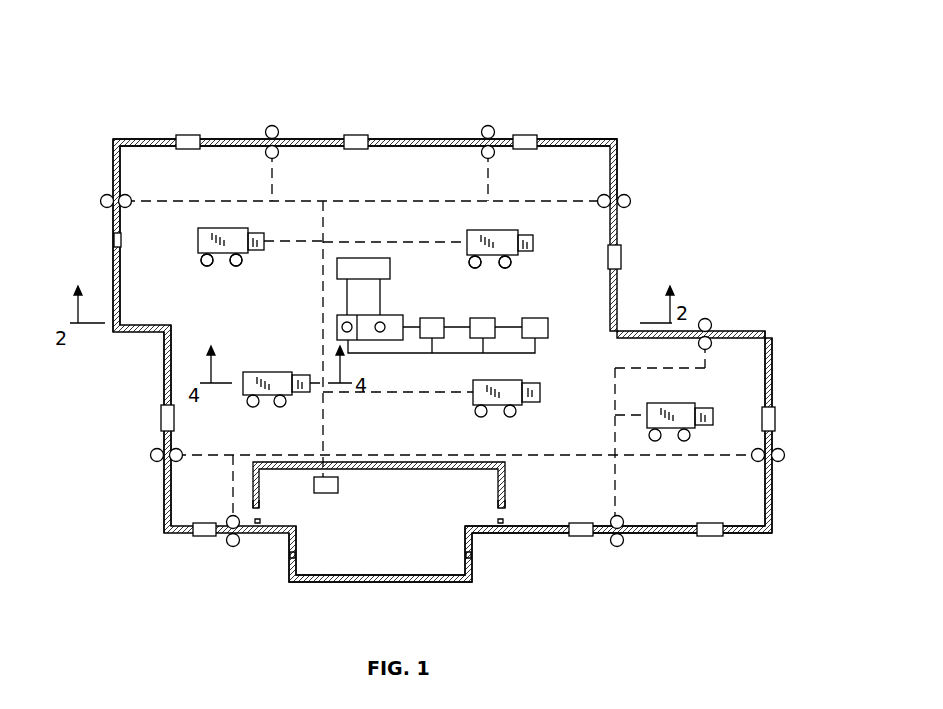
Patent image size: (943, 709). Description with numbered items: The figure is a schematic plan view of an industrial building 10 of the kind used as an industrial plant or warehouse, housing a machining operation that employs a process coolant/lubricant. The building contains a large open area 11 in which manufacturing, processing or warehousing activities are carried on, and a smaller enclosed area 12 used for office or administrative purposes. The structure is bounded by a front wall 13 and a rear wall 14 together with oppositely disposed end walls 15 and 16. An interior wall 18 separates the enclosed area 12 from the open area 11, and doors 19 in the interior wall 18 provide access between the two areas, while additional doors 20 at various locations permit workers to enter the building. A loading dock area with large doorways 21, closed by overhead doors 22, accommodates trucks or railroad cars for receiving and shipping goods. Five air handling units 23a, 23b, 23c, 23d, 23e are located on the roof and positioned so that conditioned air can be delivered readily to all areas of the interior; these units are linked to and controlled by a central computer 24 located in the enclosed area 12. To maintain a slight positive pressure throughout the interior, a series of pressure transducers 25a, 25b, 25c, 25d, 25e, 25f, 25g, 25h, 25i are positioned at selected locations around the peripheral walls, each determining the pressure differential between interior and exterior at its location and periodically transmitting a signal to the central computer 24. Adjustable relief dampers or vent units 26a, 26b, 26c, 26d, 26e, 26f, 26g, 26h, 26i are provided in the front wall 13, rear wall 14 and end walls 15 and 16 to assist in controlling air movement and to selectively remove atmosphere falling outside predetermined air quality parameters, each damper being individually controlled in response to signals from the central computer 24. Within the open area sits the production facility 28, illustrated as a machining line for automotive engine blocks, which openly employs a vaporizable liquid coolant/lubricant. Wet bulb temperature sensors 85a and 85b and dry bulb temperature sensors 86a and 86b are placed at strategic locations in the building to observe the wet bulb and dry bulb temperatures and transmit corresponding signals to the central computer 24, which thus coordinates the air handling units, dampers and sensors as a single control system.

The industrial building 10 is at (662, 111).
The open area 11 is at (286, 343).
The enclosed area 12 is at (350, 559).
The front wall 13 is at (525, 535).
The rear wall 14 is at (418, 138).
The end wall 15 is at (164, 360).
The end wall 16 is at (773, 356).
The interior wall 18 is at (437, 464).
The doors 19 is at (259, 512).
The doors 20 is at (577, 138).
The doorways 21 is at (113, 152).
The overhead doors 22 is at (114, 255).
The air handling unit 23a is at (196, 239).
The air handling unit 23b is at (521, 233).
The air handling unit 23c is at (244, 397).
The air handling unit 23d is at (523, 382).
The air handling unit 23e is at (689, 404).
The central computer 24 is at (338, 491).
The pressure transducer 25a is at (273, 125).
The pressure transducer 25b is at (489, 125).
The pressure transducer 25c is at (631, 196).
The pressure transducer 25d is at (712, 321).
The pressure transducer 25e is at (784, 464).
The pressure transducer 25f is at (622, 548).
The pressure transducer 25g is at (226, 546).
The pressure transducer 25h is at (150, 457).
The pressure transducer 25i is at (101, 202).
The relief damper 26a is at (186, 136).
The relief damper 26b is at (357, 136).
The relief damper 26c is at (527, 136).
The relief damper 26d is at (622, 255).
The relief damper 26e is at (775, 418).
The relief damper 26f is at (712, 536).
The relief damper 26g is at (577, 536).
The relief damper 26h is at (195, 536).
The relief damper 26i is at (161, 418).
The production facility 28 is at (526, 313).
The wet bulb temperature sensor 85a is at (207, 267).
The wet bulb temperature sensor 85b is at (476, 265).
The dry bulb temperature sensor 86a is at (239, 266).
The dry bulb temperature sensor 86b is at (512, 263).